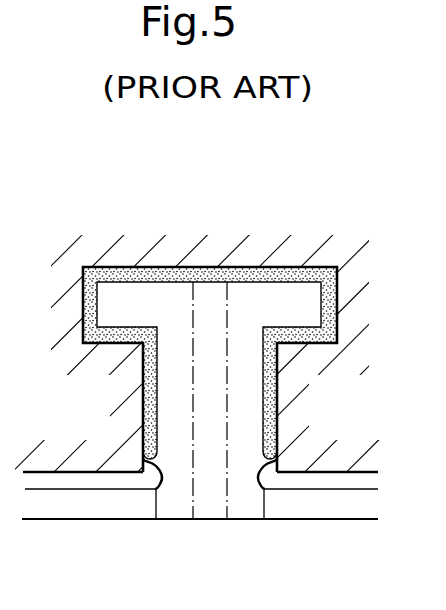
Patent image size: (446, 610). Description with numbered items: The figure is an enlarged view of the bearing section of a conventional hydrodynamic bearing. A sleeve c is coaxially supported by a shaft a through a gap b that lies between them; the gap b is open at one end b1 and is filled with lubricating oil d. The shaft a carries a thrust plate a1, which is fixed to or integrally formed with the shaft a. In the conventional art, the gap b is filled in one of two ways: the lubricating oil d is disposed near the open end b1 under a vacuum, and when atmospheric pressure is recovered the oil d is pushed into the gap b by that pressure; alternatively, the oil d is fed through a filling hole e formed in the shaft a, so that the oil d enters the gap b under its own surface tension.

The shaft a is at (270, 400).
The thrust plate a1 is at (292, 290).
The gap b is at (308, 335).
The open end of gap b1 is at (263, 463).
The sleeve c is at (108, 395).
The lubricating oil d is at (327, 297).
The filling hole e is at (196, 463).